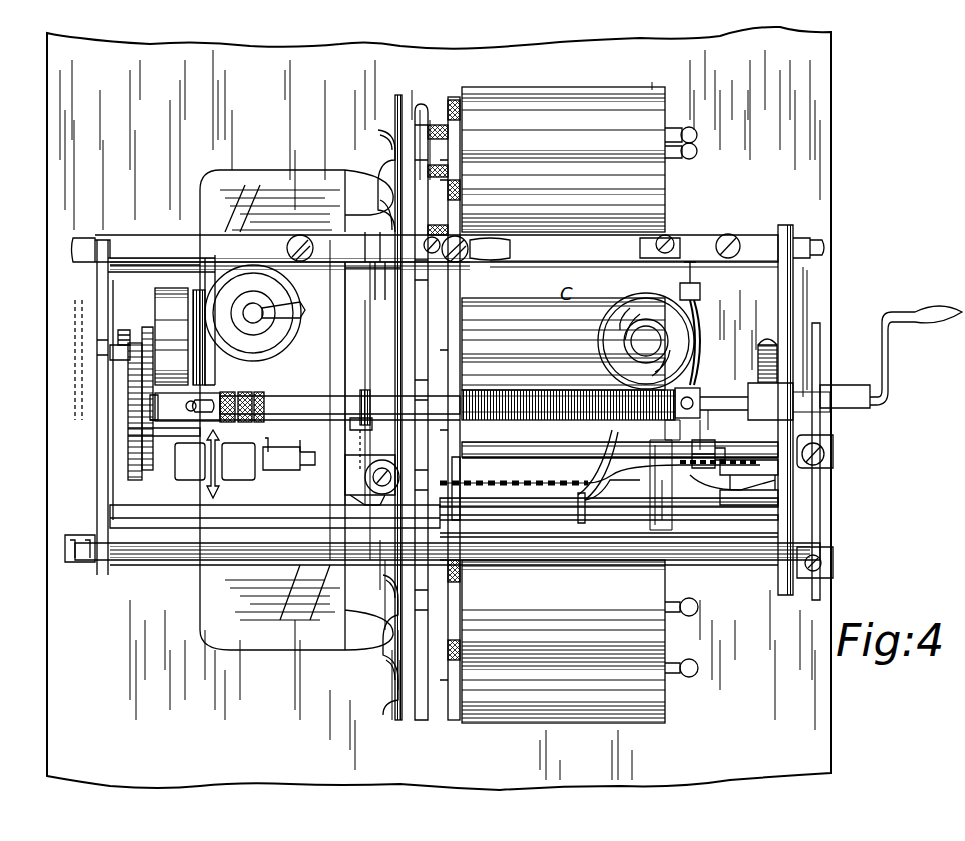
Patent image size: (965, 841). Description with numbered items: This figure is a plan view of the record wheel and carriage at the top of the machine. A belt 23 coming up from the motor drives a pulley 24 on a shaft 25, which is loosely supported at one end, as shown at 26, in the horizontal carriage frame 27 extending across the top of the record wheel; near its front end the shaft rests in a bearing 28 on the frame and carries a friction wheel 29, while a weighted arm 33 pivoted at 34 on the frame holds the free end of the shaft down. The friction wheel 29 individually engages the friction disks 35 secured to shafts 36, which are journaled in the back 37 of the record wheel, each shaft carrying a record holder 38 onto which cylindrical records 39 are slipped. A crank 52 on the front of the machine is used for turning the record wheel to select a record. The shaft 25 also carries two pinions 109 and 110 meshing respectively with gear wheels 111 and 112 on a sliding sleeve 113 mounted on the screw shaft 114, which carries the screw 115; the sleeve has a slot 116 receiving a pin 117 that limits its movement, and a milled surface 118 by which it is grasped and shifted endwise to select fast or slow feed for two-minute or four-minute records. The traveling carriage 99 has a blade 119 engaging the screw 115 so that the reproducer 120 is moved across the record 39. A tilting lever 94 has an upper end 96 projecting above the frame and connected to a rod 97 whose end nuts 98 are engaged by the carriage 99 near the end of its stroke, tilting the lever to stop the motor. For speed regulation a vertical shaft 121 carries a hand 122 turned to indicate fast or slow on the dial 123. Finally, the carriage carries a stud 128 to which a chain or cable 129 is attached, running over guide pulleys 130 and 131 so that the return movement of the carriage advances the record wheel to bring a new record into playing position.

The belt 23 is at (196, 300).
The pulley 24 is at (165, 308).
The shaft 25 is at (128, 340).
The loose support 26 is at (98, 345).
The carriage frame 27 is at (340, 182).
The bearing 28 is at (295, 240).
The friction wheel 29 is at (372, 281).
The weighted arm 33 is at (374, 444).
The pivot 34 is at (380, 150).
The friction disk 35 is at (400, 100).
The shaft 36 is at (440, 128).
The back of record wheel 37 is at (422, 108).
The record holder 38 is at (455, 102).
The cylindrical record 39 is at (535, 108).
The crank 52 is at (886, 370).
The tilting lever 94 is at (292, 462).
The upper end of tilting lever 96 is at (268, 470).
The rod 97 is at (362, 488).
The nuts 98 is at (720, 448).
The traveling carriage 99 is at (660, 455).
The pinion 109 is at (122, 332).
The pinion 110 is at (98, 338).
The gear wheel 111 is at (147, 470).
The gear wheel 112 is at (132, 470).
The sliding sleeve 113 is at (190, 404).
The screw shaft 114 is at (150, 420).
The screw 115 is at (500, 421).
The slot 116 is at (195, 422).
The pin 117 is at (185, 402).
The milled surface 118 is at (155, 420).
The blade 119 is at (612, 426).
The reproducer 120 is at (702, 358).
The shaft 121 is at (160, 262).
The hand 122 is at (262, 270).
The dial 123 is at (235, 300).
The stud 128 is at (770, 500).
The chain or cable 129 is at (855, 452).
The guide pulley 130 is at (700, 490).
The guide pulley 131 is at (345, 545).